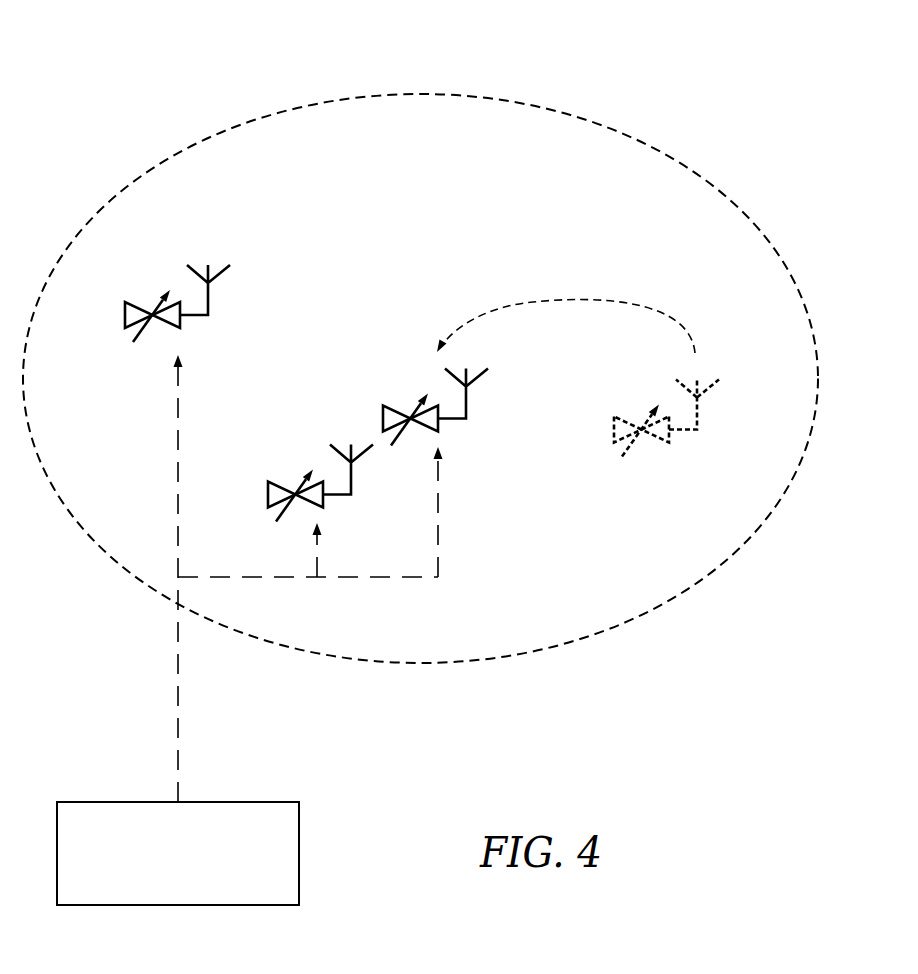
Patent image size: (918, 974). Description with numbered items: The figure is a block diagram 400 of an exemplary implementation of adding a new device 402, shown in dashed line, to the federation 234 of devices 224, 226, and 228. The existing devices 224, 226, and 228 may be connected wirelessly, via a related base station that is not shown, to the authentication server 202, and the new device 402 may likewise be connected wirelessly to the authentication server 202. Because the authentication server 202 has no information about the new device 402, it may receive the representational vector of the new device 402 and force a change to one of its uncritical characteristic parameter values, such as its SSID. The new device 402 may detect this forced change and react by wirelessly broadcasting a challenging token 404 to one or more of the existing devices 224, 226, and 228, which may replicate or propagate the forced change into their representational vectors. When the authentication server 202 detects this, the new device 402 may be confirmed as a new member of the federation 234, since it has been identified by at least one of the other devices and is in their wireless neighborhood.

The block diagram 400 is at (75, 42).
The federation 234 is at (438, 145).
The device 224 is at (177, 303).
The device 226 is at (435, 407).
The device 228 is at (314, 479).
The new device 402 is at (666, 417).
The challenging token 404 is at (554, 315).
The authentication server 202 is at (327, 828).